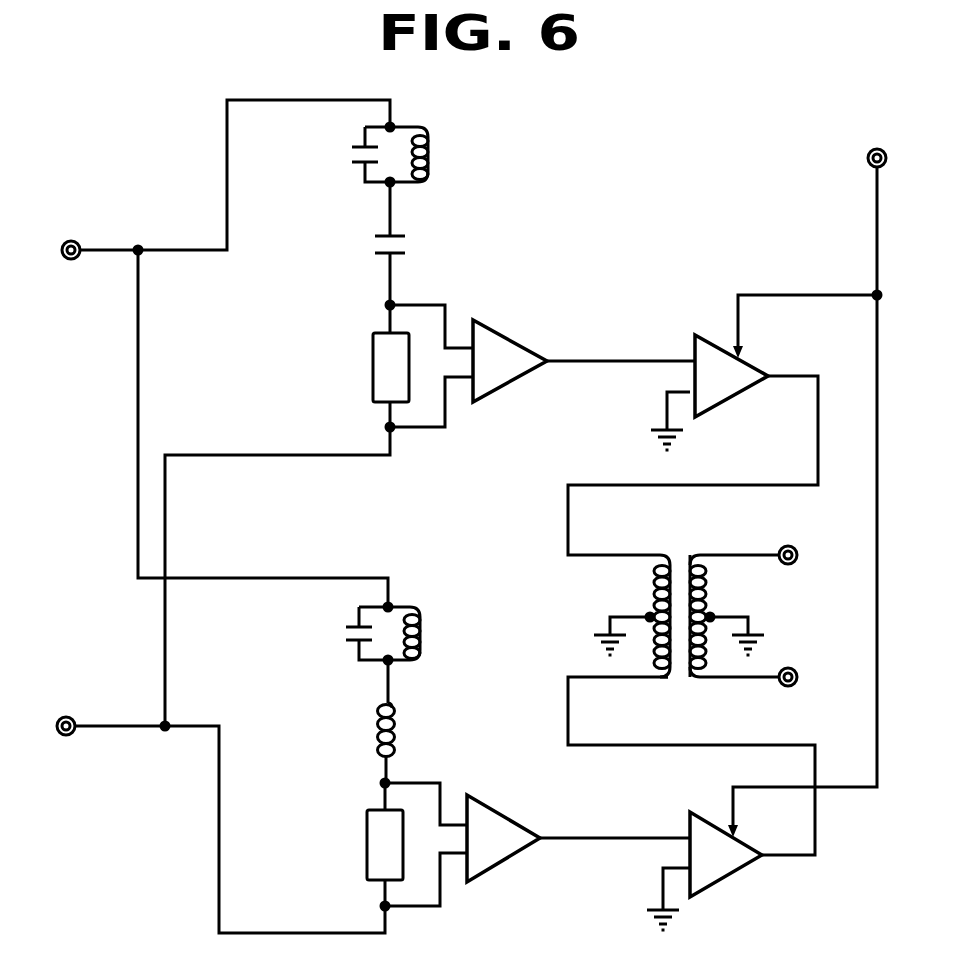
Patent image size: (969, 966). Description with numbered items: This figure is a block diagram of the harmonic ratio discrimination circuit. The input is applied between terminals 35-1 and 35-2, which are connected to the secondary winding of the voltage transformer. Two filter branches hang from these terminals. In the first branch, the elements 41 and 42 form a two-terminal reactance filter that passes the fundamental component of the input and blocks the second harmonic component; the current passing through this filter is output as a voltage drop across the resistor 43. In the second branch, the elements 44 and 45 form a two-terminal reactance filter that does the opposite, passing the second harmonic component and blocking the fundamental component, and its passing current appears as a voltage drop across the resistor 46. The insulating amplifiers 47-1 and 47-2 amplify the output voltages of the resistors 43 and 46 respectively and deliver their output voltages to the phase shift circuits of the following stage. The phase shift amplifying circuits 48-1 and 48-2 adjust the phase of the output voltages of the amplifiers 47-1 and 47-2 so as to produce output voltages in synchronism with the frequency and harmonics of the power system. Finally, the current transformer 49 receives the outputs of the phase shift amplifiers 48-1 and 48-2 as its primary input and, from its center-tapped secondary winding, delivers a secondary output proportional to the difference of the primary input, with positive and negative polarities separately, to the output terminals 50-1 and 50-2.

The input terminal 35-1 is at (72, 240).
The input terminal 35-2 is at (80, 700).
The 2-terminal reactance filter element 41 is at (426, 133).
The 2-terminal reactance filter element 42 is at (405, 246).
The resistor 43 is at (372, 359).
The 2-terminal reactance filter element 44 is at (430, 584).
The 2-terminal reactance filter element 45 is at (397, 736).
The resistor 46 is at (364, 843).
The insulating amplifier 47-1 is at (510, 334).
The insulating amplifier 47-2 is at (508, 818).
The phase shift amplifying circuit 48-1 is at (710, 334).
The phase shift amplifying circuit 48-2 is at (708, 817).
The current transformer 49 is at (676, 553).
The output terminal 50-1 is at (790, 546).
The output terminal 50-2 is at (795, 661).